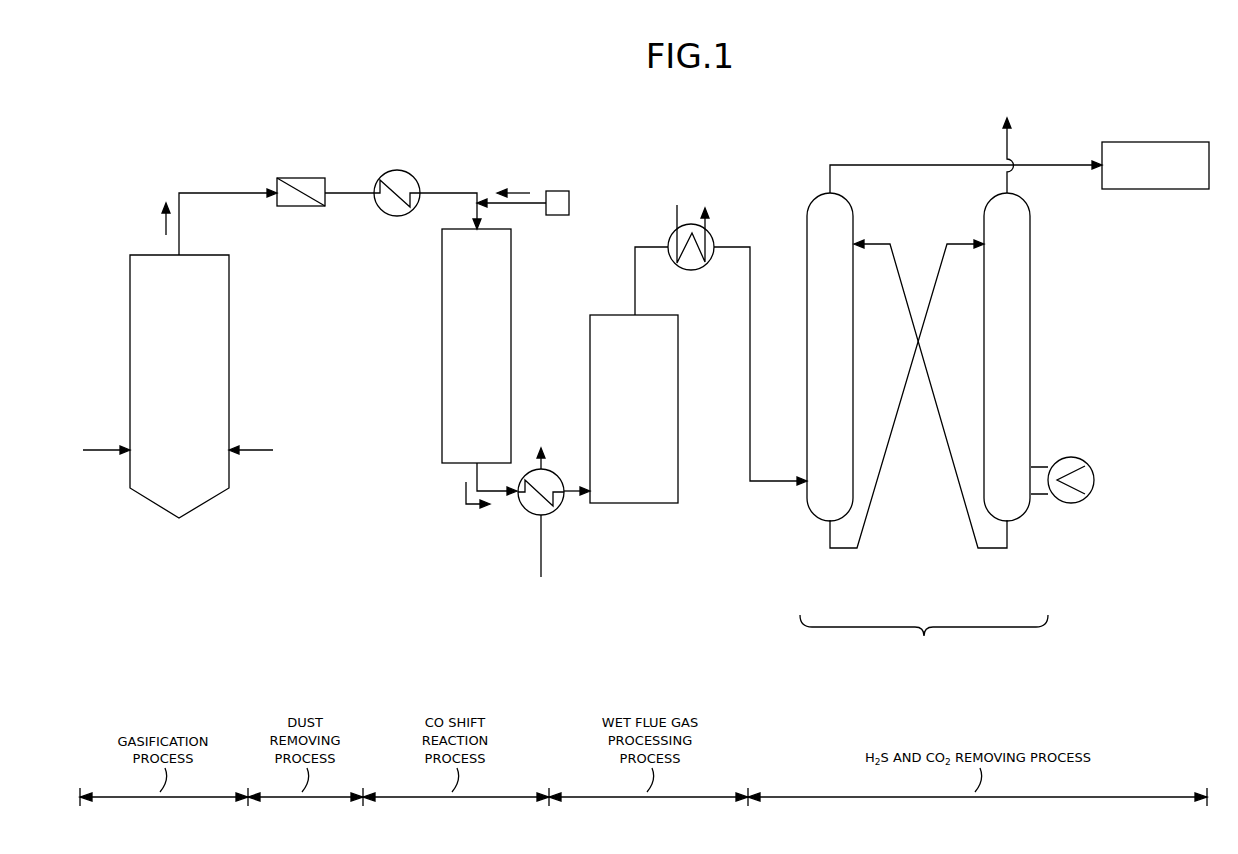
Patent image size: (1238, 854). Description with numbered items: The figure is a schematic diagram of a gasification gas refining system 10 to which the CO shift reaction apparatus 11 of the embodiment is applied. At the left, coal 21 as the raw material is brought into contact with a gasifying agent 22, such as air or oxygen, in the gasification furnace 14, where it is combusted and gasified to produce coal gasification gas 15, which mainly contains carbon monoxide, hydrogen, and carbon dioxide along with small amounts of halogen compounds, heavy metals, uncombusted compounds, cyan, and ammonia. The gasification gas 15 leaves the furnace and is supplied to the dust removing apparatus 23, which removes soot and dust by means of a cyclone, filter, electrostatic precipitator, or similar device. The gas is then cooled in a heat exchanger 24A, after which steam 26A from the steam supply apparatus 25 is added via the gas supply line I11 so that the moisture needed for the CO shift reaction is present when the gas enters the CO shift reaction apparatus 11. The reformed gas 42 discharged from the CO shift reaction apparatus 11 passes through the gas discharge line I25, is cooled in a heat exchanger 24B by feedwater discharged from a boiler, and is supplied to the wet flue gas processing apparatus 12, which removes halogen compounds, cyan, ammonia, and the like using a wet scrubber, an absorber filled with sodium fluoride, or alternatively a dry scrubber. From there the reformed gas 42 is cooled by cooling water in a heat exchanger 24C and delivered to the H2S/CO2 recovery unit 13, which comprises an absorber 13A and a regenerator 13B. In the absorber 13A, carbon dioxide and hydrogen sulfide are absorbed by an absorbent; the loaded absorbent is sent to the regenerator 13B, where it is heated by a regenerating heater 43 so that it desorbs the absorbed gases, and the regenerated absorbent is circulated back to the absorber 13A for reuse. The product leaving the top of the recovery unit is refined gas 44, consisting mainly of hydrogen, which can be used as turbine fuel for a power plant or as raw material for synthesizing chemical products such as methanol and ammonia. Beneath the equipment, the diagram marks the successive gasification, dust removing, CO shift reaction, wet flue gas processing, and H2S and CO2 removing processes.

The gasification gas refining system 10 is at (812, 137).
The CO shift reaction apparatus 11 is at (433, 313).
The wet flue gas processing apparatus 12 is at (655, 315).
The H2S/CO2 recovery unit 13 is at (924, 640).
The absorber 13A is at (820, 540).
The regenerator 13B is at (1020, 540).
The gasification furnace 14 is at (215, 255).
The coal gasification gas 15 is at (165, 225).
The coal 21 is at (102, 448).
The gasifying agent 22 is at (253, 448).
The dust removing apparatus 23 is at (310, 178).
The heat exchanger 24A is at (393, 170).
The heat exchanger 24B is at (524, 505).
The heat exchanger 24C is at (667, 240).
The steam supply apparatus 25 is at (562, 191).
The steam 26A is at (520, 190).
The reformed gas 42 is at (462, 490).
The regenerating heater 43 is at (1080, 458).
The refined gas 44 is at (1162, 142).
The gas supply line I11 is at (446, 192).
The gas discharge line I25 is at (477, 475).